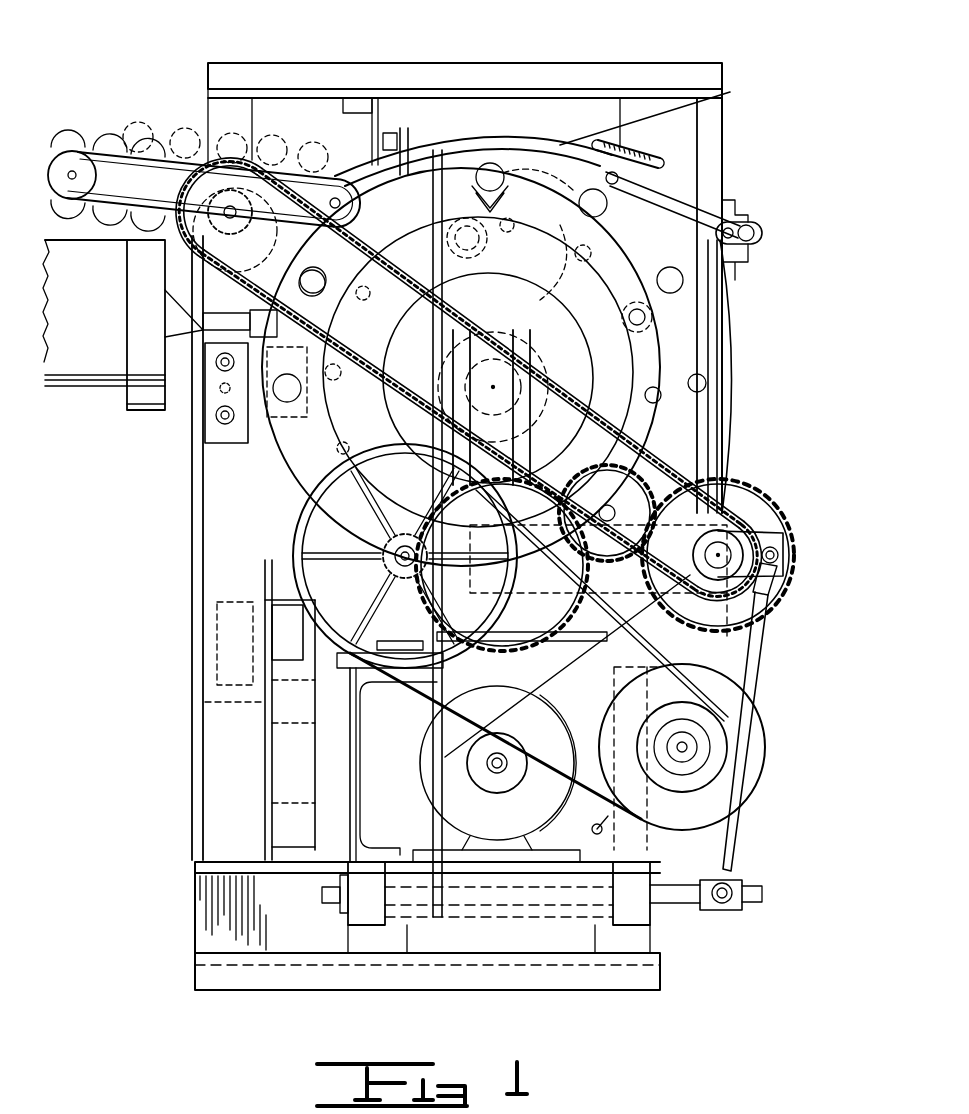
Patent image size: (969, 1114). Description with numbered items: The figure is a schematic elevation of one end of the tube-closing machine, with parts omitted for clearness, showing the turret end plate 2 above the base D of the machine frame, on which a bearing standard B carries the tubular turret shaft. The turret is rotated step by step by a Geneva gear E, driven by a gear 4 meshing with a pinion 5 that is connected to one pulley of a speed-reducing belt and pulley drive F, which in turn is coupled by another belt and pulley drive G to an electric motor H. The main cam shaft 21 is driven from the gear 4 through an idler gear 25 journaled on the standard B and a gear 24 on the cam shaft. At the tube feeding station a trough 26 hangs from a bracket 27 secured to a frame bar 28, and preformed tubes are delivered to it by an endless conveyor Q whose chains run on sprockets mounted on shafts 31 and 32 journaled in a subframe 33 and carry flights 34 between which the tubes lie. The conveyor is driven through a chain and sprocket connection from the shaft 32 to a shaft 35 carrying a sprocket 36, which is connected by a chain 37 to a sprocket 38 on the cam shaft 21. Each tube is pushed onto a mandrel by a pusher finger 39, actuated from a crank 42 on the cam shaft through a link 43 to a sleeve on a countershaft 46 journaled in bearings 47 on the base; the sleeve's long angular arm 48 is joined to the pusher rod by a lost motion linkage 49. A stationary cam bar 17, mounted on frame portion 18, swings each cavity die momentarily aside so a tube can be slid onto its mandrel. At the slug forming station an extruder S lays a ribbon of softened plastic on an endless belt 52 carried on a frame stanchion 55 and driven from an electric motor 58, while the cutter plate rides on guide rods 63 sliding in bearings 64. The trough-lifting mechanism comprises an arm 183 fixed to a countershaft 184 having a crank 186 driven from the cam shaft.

The end plate 2 is at (127, 0).
The frame bar 28 is at (498, 82).
The shaft 31 is at (72, 172).
The subframe 33 is at (100, 147).
The flights 34 is at (138, 130).
The shaft 35 is at (196, 200).
The sprocket 36 is at (178, 232).
The shaft 32 is at (322, 180).
The bracket 27 is at (356, 116).
The pusher finger 39 is at (395, 136).
The lost motion linkage 49 is at (405, 150).
The machine frame portion 18 is at (612, 132).
The cam bar 17 is at (652, 160).
The arm 183 is at (680, 200).
The countershaft 184 is at (762, 233).
The crank 186 is at (720, 352).
The trough 26 is at (382, 309).
The chain 37 is at (590, 385).
The gear 4 is at (571, 538).
The pinion 5 is at (405, 556).
The idler gear 25 is at (645, 470).
The main cam shaft 21 is at (730, 555).
The crank 42 is at (785, 563).
The gear 24 is at (785, 595).
The sprocket 38 is at (752, 590).
The link 43 is at (740, 825).
The countershaft 46 is at (750, 895).
The bearings 47 is at (366, 925).
The angular arm 48 is at (437, 822).
The endless belt 52 is at (287, 763).
The frame stanchion 55 is at (218, 553).
The electric motor 58 is at (205, 668).
The guide rods 63 is at (216, 420).
The bearings 64 is at (228, 430).
The endless conveyor Q is at (45, 200).
The extruder S is at (85, 365).
The bearing standard B is at (628, 385).
The base D is at (190, 860).
The Geneva gear E is at (522, 612).
The speed-reducing belt and pulley drive F is at (700, 690).
The belt and pulley drive G is at (603, 840).
The electric motor H is at (420, 766).